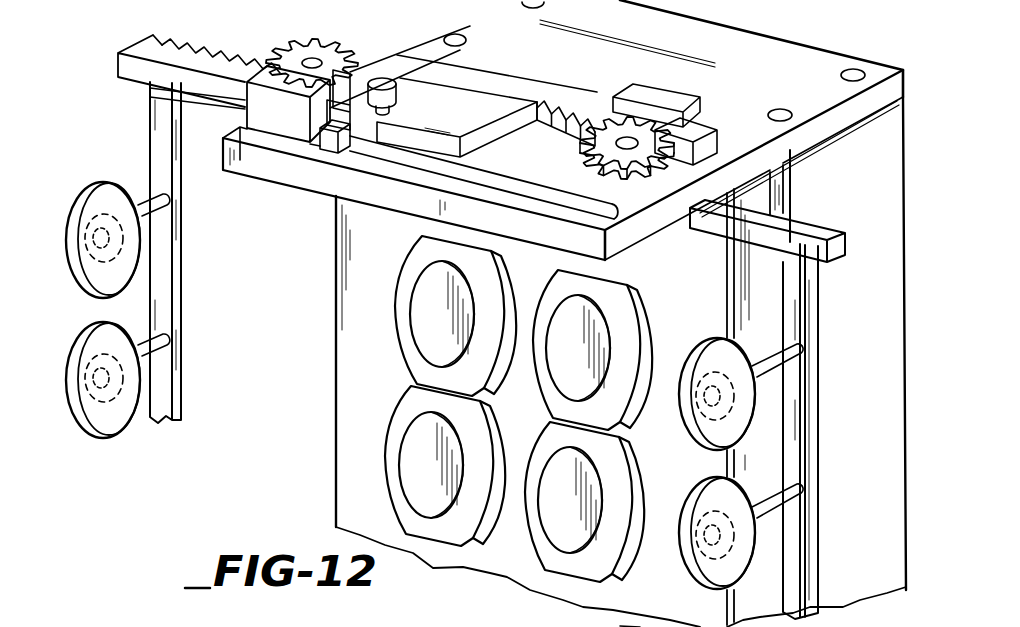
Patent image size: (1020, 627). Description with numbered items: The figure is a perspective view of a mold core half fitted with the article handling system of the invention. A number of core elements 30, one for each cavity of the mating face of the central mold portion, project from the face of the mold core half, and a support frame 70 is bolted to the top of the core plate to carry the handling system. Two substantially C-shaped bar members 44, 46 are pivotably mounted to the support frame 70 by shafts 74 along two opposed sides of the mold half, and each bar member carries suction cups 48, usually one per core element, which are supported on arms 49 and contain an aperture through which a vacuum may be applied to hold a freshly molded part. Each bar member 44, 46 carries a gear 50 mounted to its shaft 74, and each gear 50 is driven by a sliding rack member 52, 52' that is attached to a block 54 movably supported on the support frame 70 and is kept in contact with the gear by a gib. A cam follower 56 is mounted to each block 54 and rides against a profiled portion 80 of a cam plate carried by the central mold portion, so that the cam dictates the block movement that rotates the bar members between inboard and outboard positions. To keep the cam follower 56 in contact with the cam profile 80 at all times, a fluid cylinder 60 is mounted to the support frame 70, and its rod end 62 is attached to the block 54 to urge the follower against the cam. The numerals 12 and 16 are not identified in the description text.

The housing body 12 is at (881, 316).
The stop block 16 is at (643, 97).
The core element 30 is at (420, 467).
The C-shaped bar member 44 is at (205, 100).
The C-shaped bar member 46 is at (803, 233).
The suction cup 48 is at (733, 400).
The arm 49 is at (800, 490).
The gear 50 is at (300, 47).
The sliding rack member 52 is at (289, 74).
The rack 52' is at (497, 87).
The block 54 is at (440, 97).
The cam follower 56 is at (382, 76).
The fluid cylinder 60 is at (557, 196).
The rod end 62 is at (345, 172).
The support frame 70 is at (765, 104).
The shaft 74 is at (635, 140).
The profiled portion 80 is at (620, 626).